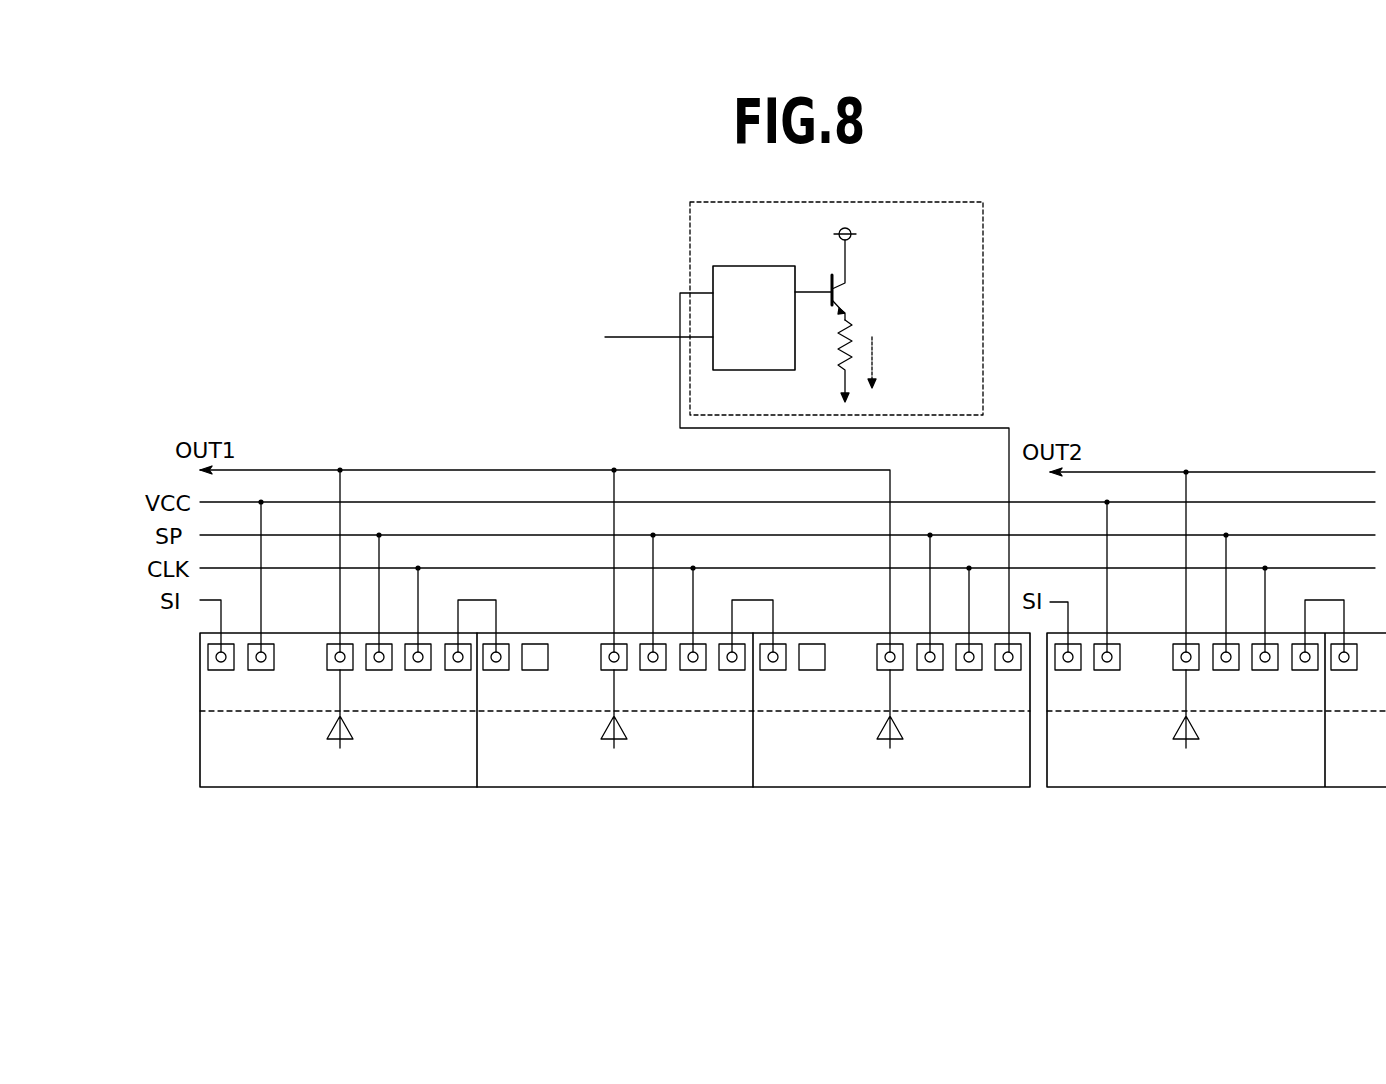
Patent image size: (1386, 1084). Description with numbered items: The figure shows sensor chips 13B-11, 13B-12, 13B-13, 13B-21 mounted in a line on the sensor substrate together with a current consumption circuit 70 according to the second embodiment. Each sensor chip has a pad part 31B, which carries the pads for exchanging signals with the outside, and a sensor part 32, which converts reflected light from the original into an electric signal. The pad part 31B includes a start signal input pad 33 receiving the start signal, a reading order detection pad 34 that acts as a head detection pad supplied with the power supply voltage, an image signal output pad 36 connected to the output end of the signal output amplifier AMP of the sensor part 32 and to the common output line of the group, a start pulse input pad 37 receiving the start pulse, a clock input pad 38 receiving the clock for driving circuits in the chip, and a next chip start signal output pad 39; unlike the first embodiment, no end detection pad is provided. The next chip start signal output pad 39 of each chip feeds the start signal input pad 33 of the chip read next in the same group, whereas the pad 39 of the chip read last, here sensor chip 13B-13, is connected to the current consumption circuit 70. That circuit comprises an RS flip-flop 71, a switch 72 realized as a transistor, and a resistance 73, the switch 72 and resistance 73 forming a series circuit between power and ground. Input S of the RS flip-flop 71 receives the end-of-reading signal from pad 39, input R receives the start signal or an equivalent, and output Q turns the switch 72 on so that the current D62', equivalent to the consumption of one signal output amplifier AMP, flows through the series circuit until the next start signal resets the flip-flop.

The current consumption circuit 70 is at (985, 275).
The RS flip-flop 71 is at (755, 266).
The switch (transistor) 72 is at (849, 286).
The resistance 73 is at (857, 327).
The current D62' is at (899, 362).
The pad part 31B is at (200, 683).
The sensor part 32 is at (200, 757).
The start signal input pad 33 is at (221, 671).
The reading order detection pad 34 is at (261, 671).
The image signal output pad 36 is at (338, 672).
The start pulse input pad 37 is at (379, 671).
The clock input pad 38 is at (418, 671).
The next chip start signal output pad 39 is at (458, 671).
The signal output amplifier AMP is at (355, 729).
The sensor chip 13B-11 is at (338, 788).
The sensor chip 13B-12 is at (615, 788).
The sensor chip 13B-13 is at (890, 788).
The sensor chip 13B-21 is at (1208, 788).